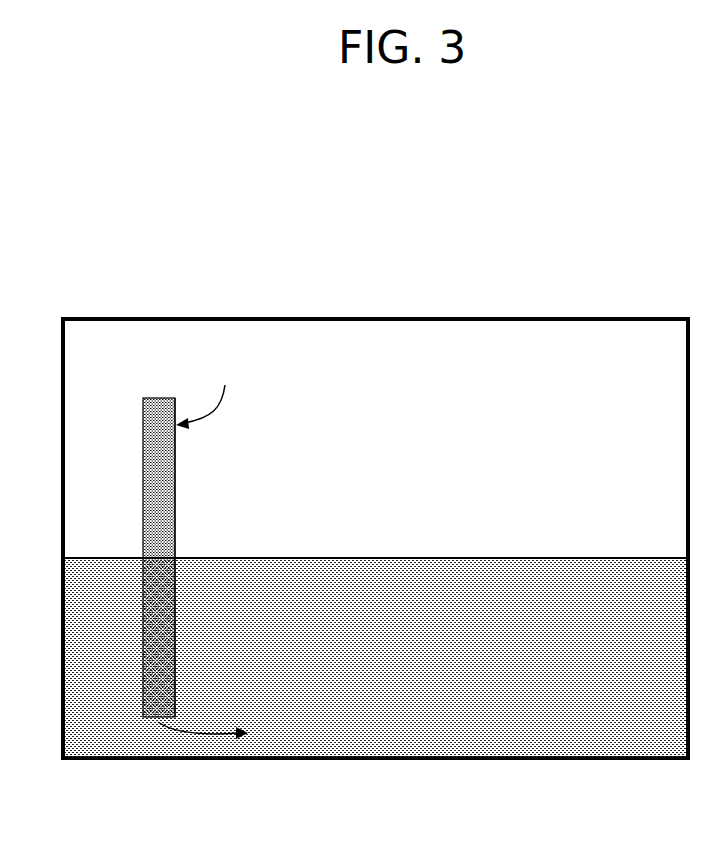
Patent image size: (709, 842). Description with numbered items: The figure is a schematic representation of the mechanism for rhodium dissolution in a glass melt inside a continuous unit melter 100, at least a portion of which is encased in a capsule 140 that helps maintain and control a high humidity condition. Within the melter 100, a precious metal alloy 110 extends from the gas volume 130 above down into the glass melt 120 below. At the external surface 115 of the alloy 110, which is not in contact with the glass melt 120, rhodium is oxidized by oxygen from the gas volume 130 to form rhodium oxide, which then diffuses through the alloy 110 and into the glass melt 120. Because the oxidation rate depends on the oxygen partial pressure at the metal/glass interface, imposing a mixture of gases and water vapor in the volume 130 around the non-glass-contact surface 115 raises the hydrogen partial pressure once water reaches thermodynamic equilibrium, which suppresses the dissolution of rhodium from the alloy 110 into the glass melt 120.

The continuous unit melter 100 is at (393, 224).
The capsule 140 is at (175, 318).
The gas volume 130 is at (375, 439).
The glass melt 120 is at (376, 657).
The precious metal alloy 110 is at (130, 557).
The external surface 115 is at (176, 458).